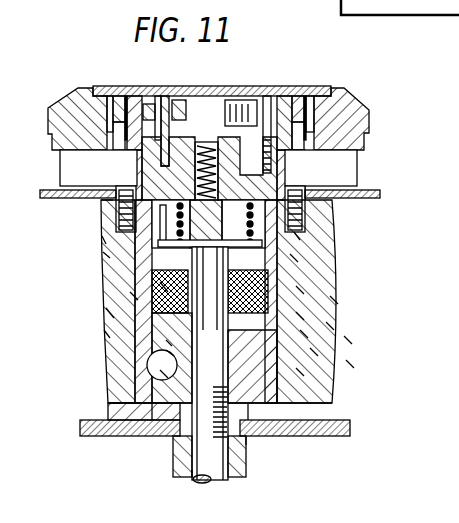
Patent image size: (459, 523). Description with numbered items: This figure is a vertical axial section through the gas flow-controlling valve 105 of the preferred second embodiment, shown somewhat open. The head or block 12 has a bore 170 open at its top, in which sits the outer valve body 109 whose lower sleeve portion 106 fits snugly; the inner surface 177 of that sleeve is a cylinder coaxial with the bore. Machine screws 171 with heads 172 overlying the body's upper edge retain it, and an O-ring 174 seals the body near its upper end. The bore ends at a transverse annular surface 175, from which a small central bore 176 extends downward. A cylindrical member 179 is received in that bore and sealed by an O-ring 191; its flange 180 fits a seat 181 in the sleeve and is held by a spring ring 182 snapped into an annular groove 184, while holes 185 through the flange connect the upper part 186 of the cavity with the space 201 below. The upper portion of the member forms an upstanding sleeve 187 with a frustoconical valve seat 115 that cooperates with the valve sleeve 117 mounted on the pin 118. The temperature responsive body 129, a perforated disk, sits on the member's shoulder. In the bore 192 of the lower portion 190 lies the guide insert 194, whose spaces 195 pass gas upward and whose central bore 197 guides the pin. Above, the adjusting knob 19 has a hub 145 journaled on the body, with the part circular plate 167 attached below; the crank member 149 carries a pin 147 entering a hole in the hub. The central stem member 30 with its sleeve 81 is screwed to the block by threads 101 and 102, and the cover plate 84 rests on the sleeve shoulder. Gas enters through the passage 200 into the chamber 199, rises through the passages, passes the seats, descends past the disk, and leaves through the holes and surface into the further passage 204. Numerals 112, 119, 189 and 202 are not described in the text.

The adjusting knob 19 is at (345, 108).
The pin 147 is at (148, 108).
The crank member 149 is at (180, 104).
The hub 145 is at (256, 141).
The part circular plate 167 is at (98, 168).
The outer valve body 109 is at (321, 168).
The heads of machine screws 172 is at (126, 192).
The flange plate 112 is at (362, 198).
The valve 105 is at (320, 243).
The sleeve portion 106 is at (312, 270).
The upstanding sleeve 187 is at (171, 237).
The valve sleeve 117 is at (270, 270).
The pin 118 is at (169, 301).
The central stem member 30 is at (206, 470).
The bore 192 is at (190, 366).
The spaces 195 is at (246, 381).
The guide insert 194 is at (144, 413).
The cover plate 84 is at (96, 437).
The chamber 199 is at (180, 452).
The sleeve 81 is at (244, 462).
The threads 101 is at (200, 482).
The passage 200 is at (249, 409).
The threads 102 is at (247, 441).
The central bore 197 is at (190, 470).
The central bore 176 is at (155, 416).
The passage 204 is at (140, 407).
The machine screws 171 is at (103, 208).
The O-ring 174 is at (110, 240).
The inner surface 177 is at (112, 256).
The valve seat 115 is at (198, 293).
The bore 119 is at (140, 297).
The holes 185 is at (114, 315).
The head or block 12 is at (25, 346).
The seat 181 is at (108, 335).
The spring ring 182 is at (172, 344).
The passage 202 is at (174, 353).
The lower portion 190 is at (168, 376).
The upper part of cavity 186 is at (298, 237).
The temperature responsive body 129 is at (290, 259).
The bore 170 is at (300, 291).
The passage 189 is at (335, 301).
The flange 180 is at (365, 327).
The annular groove 184 is at (300, 335).
The space 201 is at (350, 341).
The transverse annular surface 175 is at (312, 353).
The circular cylindrical member 179 is at (350, 366).
The O-ring 191 is at (298, 373).